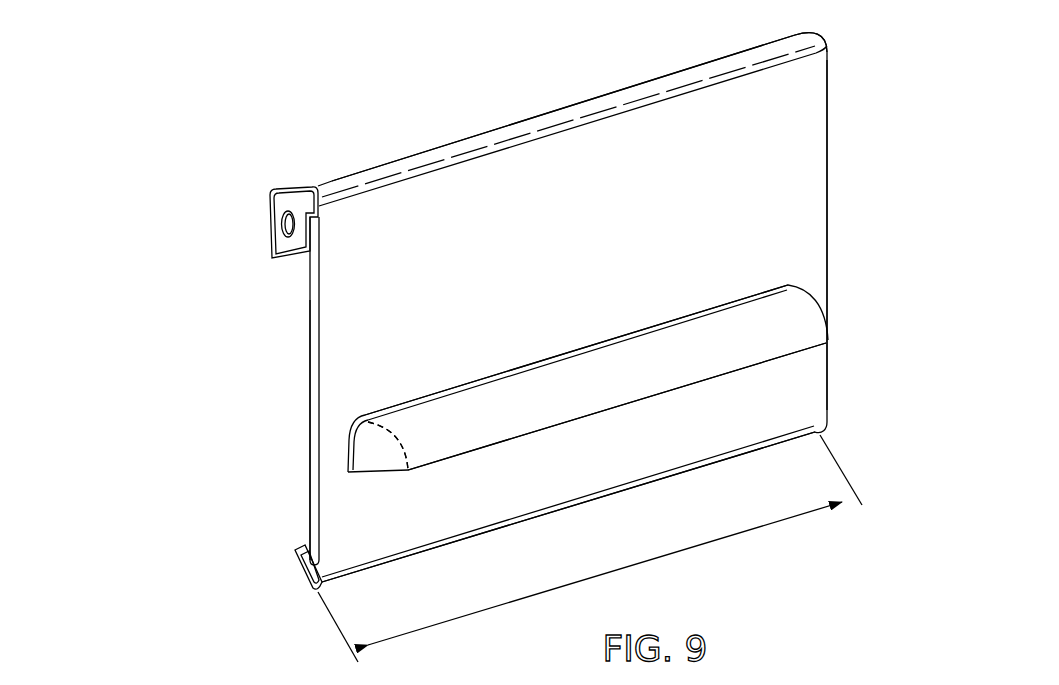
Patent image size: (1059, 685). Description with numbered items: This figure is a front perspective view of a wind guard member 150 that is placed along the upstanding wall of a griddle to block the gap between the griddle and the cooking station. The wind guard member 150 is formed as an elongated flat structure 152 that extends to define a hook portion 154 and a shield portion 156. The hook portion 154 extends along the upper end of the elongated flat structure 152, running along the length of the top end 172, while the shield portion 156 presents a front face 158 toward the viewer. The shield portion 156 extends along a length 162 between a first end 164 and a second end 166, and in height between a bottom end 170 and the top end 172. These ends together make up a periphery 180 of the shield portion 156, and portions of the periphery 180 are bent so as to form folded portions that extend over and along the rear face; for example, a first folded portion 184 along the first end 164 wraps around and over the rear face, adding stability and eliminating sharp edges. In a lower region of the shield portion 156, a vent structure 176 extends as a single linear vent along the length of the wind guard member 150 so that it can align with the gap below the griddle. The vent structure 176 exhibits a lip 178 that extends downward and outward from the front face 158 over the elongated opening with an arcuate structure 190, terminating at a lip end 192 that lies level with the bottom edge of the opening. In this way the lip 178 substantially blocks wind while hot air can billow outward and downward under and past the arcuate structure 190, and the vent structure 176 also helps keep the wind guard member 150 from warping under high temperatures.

The wind guard member 150 is at (108, 172).
The elongated flat structure 152 is at (834, 176).
The hook portion 154 is at (256, 267).
The shield portion 156 is at (796, 211).
The front face 158 is at (808, 246).
The length 162 is at (790, 517).
The first end 164 is at (319, 389).
The second end 166 is at (829, 128).
The bottom end 170 is at (452, 550).
The top end 172 is at (393, 153).
The vent structure 176 is at (802, 322).
The lip 178 is at (798, 340).
The periphery 180 is at (832, 66).
The first folded portion 184 is at (311, 479).
The arcuate structure 190 is at (470, 431).
The lip end 192 is at (688, 390).